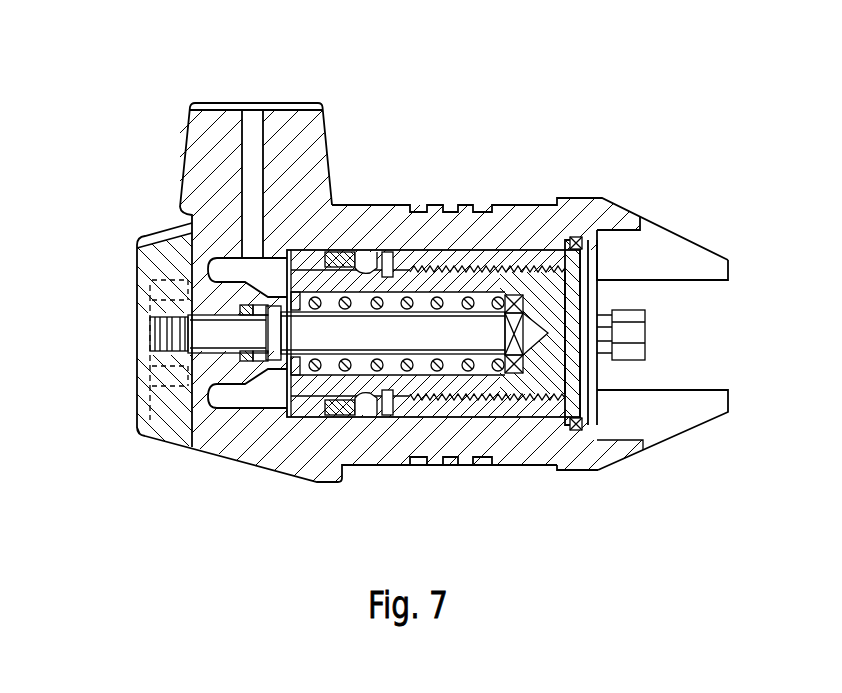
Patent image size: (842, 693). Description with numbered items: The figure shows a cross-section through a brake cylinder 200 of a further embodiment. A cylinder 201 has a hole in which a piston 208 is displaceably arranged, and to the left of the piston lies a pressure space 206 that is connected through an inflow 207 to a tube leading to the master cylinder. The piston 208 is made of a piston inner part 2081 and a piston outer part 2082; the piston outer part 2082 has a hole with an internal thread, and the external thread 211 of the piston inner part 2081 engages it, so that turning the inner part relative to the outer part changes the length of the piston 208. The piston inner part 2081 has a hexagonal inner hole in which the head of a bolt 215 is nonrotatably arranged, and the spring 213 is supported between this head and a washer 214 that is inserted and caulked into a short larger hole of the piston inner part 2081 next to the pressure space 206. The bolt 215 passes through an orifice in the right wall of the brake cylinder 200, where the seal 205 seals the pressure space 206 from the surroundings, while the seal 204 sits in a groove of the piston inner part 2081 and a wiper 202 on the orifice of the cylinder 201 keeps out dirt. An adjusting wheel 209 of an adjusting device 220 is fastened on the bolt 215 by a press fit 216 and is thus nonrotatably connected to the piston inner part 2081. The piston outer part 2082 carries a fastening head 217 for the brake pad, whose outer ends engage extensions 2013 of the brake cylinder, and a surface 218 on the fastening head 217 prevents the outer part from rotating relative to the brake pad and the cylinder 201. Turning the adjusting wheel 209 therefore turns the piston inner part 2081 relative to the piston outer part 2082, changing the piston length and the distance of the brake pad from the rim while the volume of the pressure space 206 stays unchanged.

The brake cylinder 200 is at (566, 155).
The cylinder 201 is at (605, 460).
The wiper 202 is at (575, 432).
The seal 204 is at (345, 250).
The seal 205 is at (267, 397).
The pressure space 206 is at (276, 470).
The inflow 207 is at (253, 128).
The piston 208 is at (603, 272).
The adjusting wheel 209 is at (138, 412).
The external thread 211 is at (520, 420).
The spring 213 is at (369, 392).
The washer 214 is at (292, 260).
The bolt 215 is at (352, 344).
The press fit 216 is at (152, 326).
The fastening head 217 is at (630, 318).
The surface 218 is at (625, 343).
The adjusting device 220 is at (118, 302).
The extensions 2013 is at (678, 420).
The piston inner part 2081 is at (508, 262).
The piston outer part 2082 is at (438, 265).